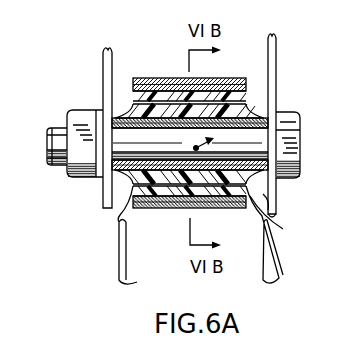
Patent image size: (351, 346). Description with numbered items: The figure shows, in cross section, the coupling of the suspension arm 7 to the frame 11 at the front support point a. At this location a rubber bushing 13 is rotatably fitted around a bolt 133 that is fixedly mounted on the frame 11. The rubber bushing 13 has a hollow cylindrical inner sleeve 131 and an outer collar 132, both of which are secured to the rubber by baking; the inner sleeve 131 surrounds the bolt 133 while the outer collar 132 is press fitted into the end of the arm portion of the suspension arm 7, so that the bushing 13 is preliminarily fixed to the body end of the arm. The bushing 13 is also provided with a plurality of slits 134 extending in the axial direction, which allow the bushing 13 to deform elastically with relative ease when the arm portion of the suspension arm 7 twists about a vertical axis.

The suspension arm 7 is at (158, 78).
The frame 11 is at (276, 42).
The rubber bushing 13 is at (278, 181).
The hollow cylindrical inner sleeve 131 is at (253, 128).
The outer collar 132 is at (239, 207).
The bolt 133 is at (297, 139).
The slits 134 is at (268, 222).
The front support point a is at (259, 116).